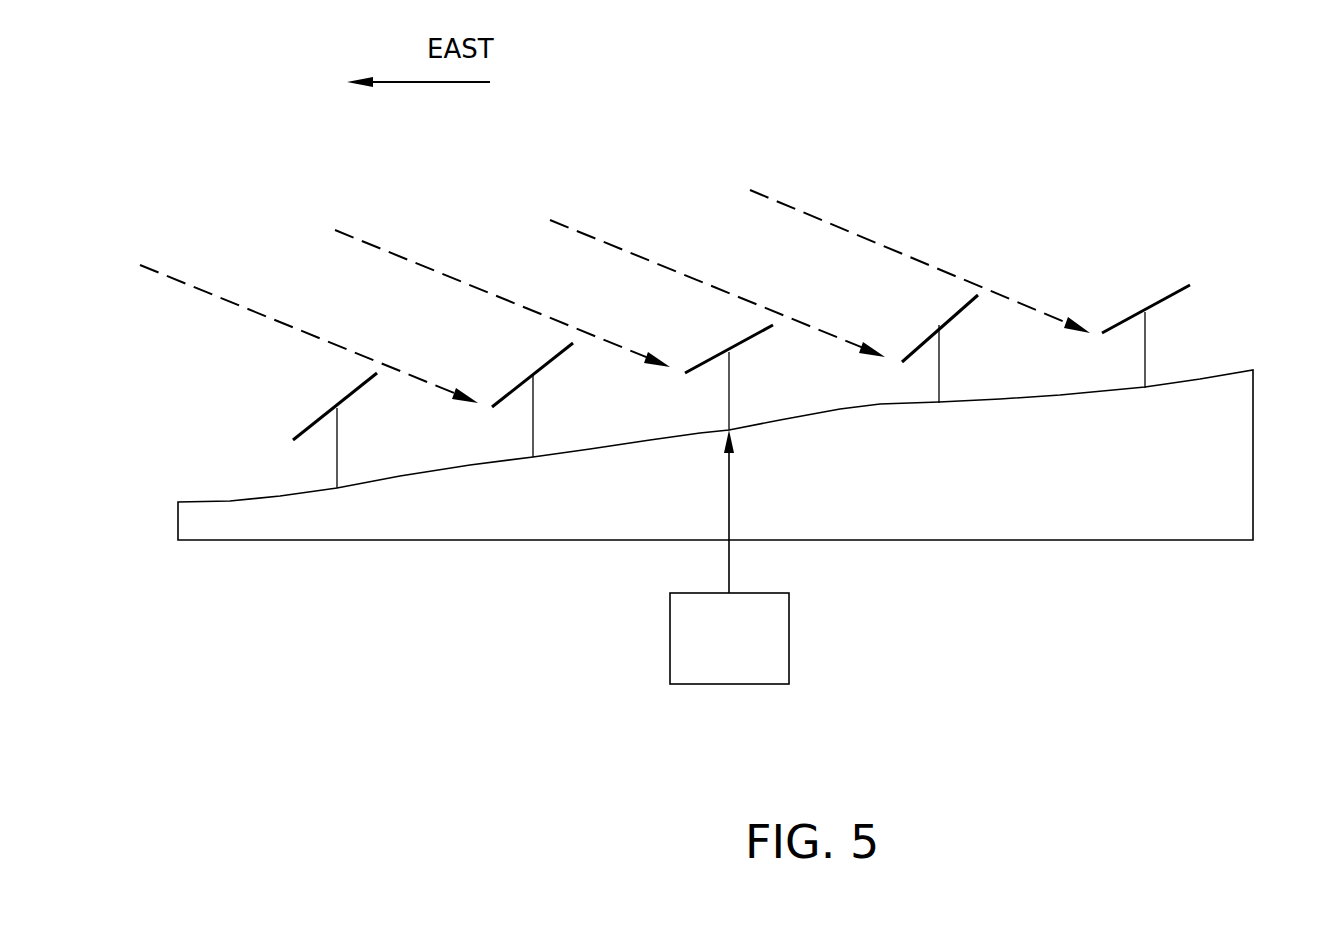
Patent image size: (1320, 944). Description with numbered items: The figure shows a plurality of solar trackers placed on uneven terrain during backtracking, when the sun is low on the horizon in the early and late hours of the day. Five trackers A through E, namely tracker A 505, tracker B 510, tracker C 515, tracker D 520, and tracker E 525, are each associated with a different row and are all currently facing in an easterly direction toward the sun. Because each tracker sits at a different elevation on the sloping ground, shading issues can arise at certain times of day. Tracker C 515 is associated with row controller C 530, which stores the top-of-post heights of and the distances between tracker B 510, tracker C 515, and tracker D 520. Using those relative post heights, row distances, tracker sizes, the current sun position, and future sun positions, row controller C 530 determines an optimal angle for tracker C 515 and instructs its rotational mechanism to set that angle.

The tracker A 505 is at (337, 468).
The tracker B 510 is at (533, 436).
The tracker C 515 is at (733, 408).
The tracker D 520 is at (940, 383).
The tracker E 525 is at (1147, 366).
The row controller C 530 is at (706, 653).